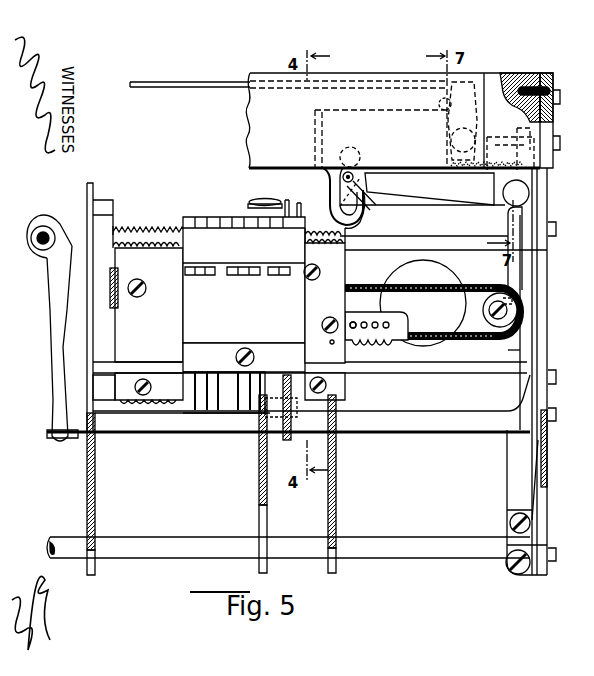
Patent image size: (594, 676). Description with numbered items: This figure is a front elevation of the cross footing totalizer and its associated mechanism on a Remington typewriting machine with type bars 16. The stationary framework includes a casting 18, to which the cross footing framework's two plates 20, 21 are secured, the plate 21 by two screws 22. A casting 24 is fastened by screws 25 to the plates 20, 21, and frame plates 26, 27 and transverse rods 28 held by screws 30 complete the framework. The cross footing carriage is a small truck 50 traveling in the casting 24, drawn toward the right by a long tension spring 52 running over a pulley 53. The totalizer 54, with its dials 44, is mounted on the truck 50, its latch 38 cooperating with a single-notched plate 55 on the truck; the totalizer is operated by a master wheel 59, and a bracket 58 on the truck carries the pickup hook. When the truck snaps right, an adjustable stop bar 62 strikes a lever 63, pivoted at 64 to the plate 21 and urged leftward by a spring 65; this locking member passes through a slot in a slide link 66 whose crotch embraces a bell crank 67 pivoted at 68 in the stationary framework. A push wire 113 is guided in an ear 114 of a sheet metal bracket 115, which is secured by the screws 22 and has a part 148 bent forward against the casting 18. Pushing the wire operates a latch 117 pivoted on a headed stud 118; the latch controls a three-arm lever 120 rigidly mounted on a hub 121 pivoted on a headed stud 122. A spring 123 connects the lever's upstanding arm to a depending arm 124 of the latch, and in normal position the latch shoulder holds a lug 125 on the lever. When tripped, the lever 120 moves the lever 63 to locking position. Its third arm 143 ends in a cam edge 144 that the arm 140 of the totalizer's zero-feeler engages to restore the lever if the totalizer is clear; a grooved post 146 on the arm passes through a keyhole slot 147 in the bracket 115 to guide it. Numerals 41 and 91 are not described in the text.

The type bars 16 is at (352, 320).
The casting 18 is at (250, 126).
The plate 20 is at (96, 471).
The plate 21 is at (548, 323).
The screws 22 is at (560, 97).
The casting 24 is at (452, 373).
The screws 25 is at (116, 224).
The frame plate 26 is at (267, 501).
The frame plate 27 is at (337, 501).
The transverse rods 28 is at (472, 411).
The screws 30 is at (556, 413).
The latch 38 is at (288, 204).
The lever 41 is at (248, 203).
The dial 44 is at (213, 278).
The truck 50 is at (149, 326).
The tension spring 52 is at (372, 284).
The pulley 53 is at (485, 316).
The totalizer 54 is at (183, 316).
The plate 55 is at (318, 274).
The bracket 58 is at (118, 283).
The master wheel 59 is at (281, 418).
The adjustable stop bar 62 is at (376, 333).
The lever 63 is at (511, 350).
The pivot 64 is at (518, 502).
The spring 65 is at (547, 493).
The slide link 66 is at (470, 434).
The bell crank 67 is at (52, 386).
The pivot 68 is at (46, 243).
The screw 91 is at (236, 358).
The push wire 113 is at (165, 82).
The ear 114 is at (439, 102).
The sheet metal bracket 115 is at (429, 189).
The latch 117 is at (476, 121).
The headed stud 118 is at (462, 131).
The three-arm lever 120 is at (496, 318).
The hub 121 is at (500, 297).
The headed stud 122 is at (516, 193).
The spring 123 is at (510, 153).
The depending arm 124 is at (451, 160).
The lug 125 is at (527, 143).
The arm 140 is at (308, 207).
The third arm 143 is at (442, 205).
The cam edge 144 is at (372, 206).
The post 146 is at (337, 186).
The keyhole slot 147 is at (365, 213).
The part 148 is at (315, 143).